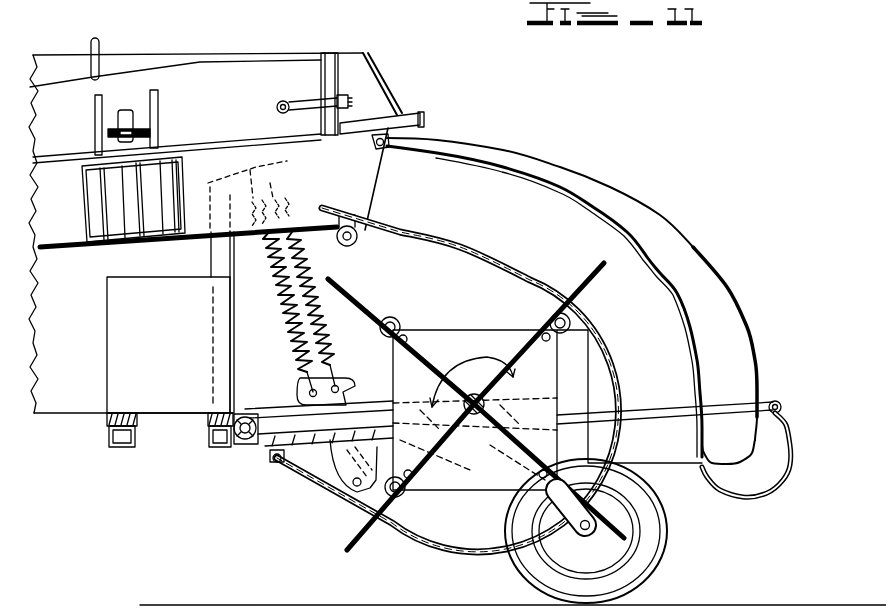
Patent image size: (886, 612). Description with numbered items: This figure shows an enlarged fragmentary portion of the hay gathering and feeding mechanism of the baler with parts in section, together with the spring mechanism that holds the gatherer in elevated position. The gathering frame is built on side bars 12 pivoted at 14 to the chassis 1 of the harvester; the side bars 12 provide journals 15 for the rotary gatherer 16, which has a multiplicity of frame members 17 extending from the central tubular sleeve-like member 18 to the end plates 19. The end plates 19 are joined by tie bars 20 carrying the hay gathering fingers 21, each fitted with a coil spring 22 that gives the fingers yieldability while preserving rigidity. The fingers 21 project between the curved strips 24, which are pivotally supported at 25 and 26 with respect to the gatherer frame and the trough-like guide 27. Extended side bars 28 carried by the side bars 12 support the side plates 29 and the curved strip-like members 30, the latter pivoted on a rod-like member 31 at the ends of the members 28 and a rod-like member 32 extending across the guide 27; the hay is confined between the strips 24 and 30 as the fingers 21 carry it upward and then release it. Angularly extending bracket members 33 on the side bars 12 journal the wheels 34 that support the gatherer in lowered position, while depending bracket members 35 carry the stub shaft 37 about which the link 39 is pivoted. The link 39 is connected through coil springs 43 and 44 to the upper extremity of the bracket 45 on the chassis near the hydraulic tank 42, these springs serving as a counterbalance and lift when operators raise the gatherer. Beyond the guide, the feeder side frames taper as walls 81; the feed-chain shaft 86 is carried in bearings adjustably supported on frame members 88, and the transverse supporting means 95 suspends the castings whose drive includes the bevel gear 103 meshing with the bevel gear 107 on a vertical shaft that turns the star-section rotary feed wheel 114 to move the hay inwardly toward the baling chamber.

The chassis 1 is at (210, 430).
The side bars 12 is at (277, 452).
The pivot 14 is at (247, 440).
The journals 15 is at (482, 378).
The rotary gatherer 16 is at (485, 322).
The frame members 17 is at (434, 359).
The central tubular sleeve-like member 18 is at (432, 392).
The end plates 19 is at (557, 402).
The tie bars 20 is at (410, 330).
The hay gathering fingers 21 is at (350, 292).
The coil spring 22 is at (393, 320).
The curved strips 24 is at (463, 552).
The pivotal support 25 is at (283, 424).
The pivotal support 26 is at (349, 226).
The trough-like guide 27 is at (326, 178).
The extended side bars 28 is at (305, 442).
The side plates 29 is at (417, 182).
The curved strip-like members 30 is at (648, 258).
The rod-like member 31 is at (773, 401).
The rod-like member 32 is at (388, 137).
The bracket members 33 is at (538, 522).
The wheels 34 is at (627, 518).
The bracket members 35 is at (357, 513).
The stub shaft 37 is at (343, 477).
The link 39 is at (298, 398).
The hydraulic tank 42 is at (113, 347).
The coil spring 43 is at (265, 303).
The coil spring 44 is at (313, 260).
The bracket 45 is at (290, 166).
The tapered walls 81 is at (202, 163).
The shaft 86 is at (278, 103).
The frame members 88 is at (345, 66).
The supporting means 95 is at (100, 46).
The bevel gear 103 is at (115, 120).
The bevel gear 107 is at (143, 125).
The rotary feed wheel 114 is at (82, 178).